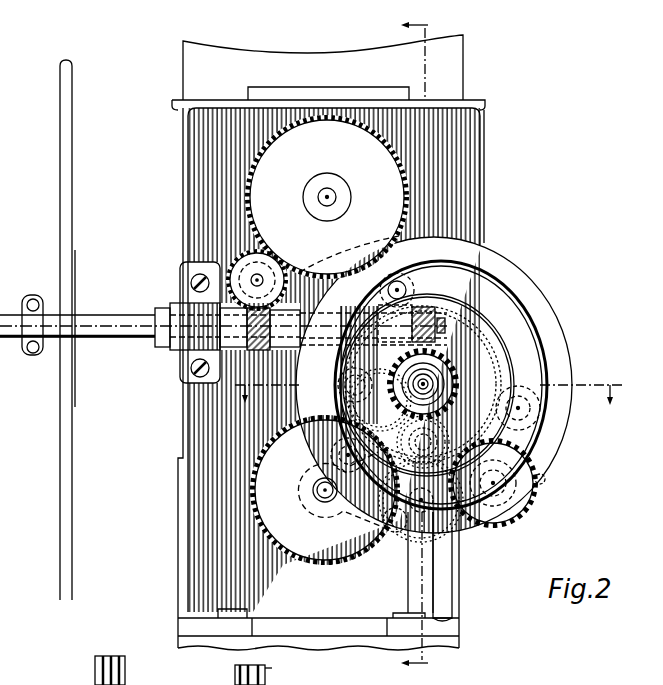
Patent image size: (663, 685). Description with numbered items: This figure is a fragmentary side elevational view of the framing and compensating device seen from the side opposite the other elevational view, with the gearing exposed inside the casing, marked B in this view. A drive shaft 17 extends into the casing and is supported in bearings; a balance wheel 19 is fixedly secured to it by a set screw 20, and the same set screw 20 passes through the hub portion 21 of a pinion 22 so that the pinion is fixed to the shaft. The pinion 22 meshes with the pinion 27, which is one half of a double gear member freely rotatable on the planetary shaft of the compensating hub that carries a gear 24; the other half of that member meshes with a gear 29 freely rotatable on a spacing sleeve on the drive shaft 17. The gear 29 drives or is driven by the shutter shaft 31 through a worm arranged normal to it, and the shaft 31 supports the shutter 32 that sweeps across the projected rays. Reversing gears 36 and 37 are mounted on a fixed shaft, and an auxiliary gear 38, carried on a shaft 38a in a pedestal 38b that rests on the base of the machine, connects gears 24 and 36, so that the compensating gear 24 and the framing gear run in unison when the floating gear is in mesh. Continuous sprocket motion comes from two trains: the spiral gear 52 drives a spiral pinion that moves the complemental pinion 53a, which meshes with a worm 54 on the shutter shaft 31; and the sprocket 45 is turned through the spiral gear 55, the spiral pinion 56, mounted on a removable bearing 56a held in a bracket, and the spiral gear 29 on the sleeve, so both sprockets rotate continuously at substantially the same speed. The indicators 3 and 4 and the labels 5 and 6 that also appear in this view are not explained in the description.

The casing B is at (474, 166).
The spiral gear 52 is at (400, 163).
The complemental pinion 53a is at (243, 252).
The spiral gear 55 is at (293, 559).
The worm 54 is at (193, 384).
The shutter shaft 31 is at (107, 318).
The shutter 32 is at (73, 469).
The removable bearing 56a is at (296, 345).
The spiral pinion 56 is at (345, 372).
The balance wheel 19 is at (548, 360).
The drive shaft 17 is at (430, 378).
The gear 24 is at (508, 350).
The gear 29 is at (505, 350).
The hub portion 21 is at (424, 380).
The pinion 22 is at (455, 372).
The set screw 20 is at (455, 395).
The pinion 27 is at (447, 438).
The reversing gear 36 is at (530, 504).
The reversing gear 37 is at (540, 479).
The auxiliary gear 38 is at (461, 534).
The shaft 38a is at (405, 538).
The pedestal 38b is at (426, 590).
The section line 3- 3 is at (429, 386).
The section line 4- 4 is at (434, 26).
The sprocket 45 is at (95, 665).
The part 5 is at (233, 682).
The part 6 is at (275, 676).